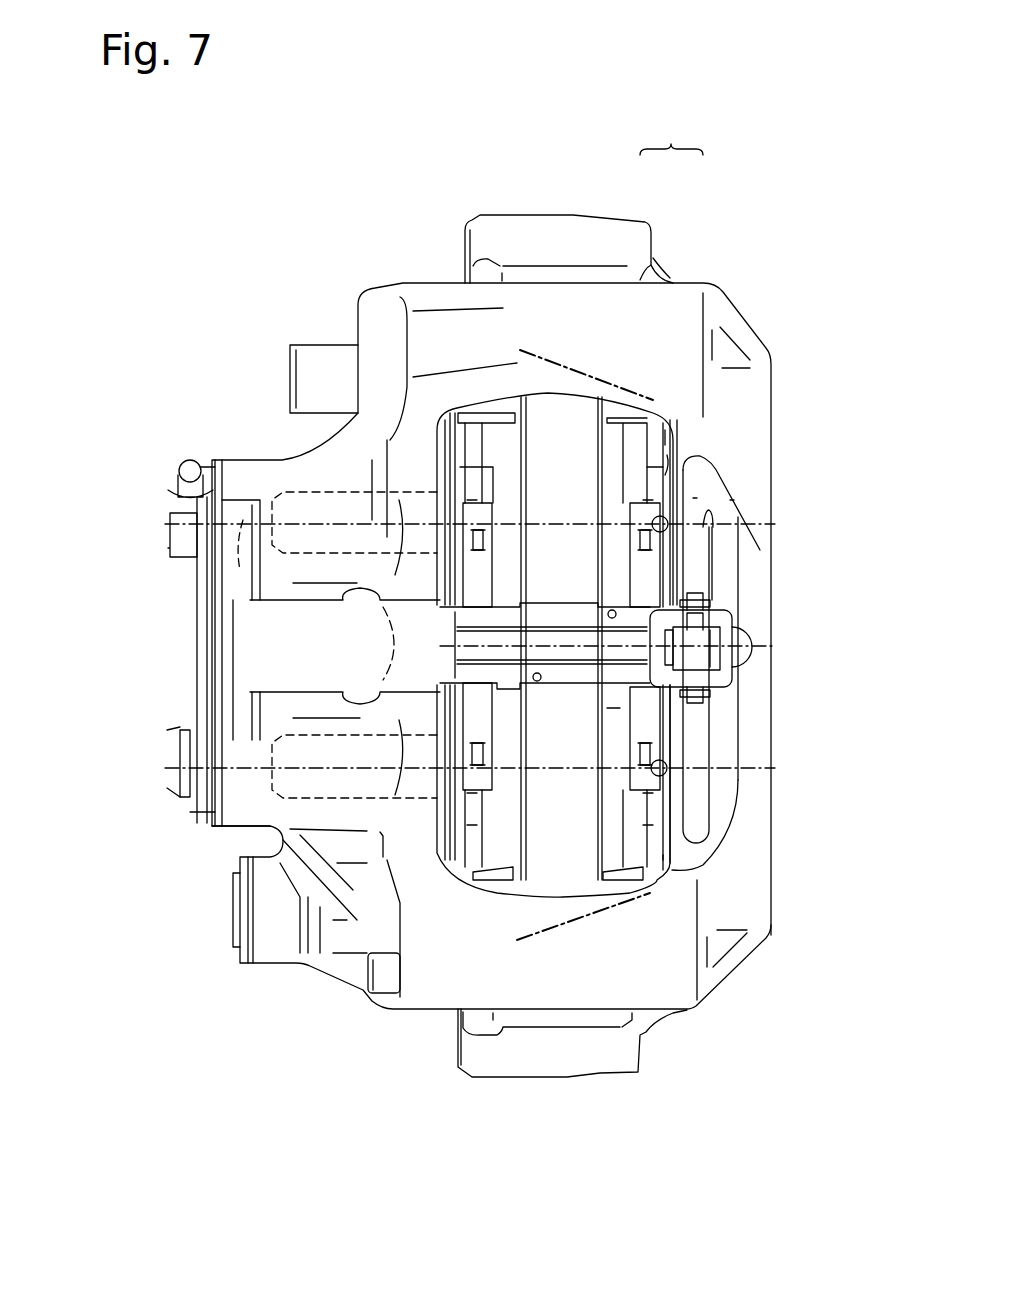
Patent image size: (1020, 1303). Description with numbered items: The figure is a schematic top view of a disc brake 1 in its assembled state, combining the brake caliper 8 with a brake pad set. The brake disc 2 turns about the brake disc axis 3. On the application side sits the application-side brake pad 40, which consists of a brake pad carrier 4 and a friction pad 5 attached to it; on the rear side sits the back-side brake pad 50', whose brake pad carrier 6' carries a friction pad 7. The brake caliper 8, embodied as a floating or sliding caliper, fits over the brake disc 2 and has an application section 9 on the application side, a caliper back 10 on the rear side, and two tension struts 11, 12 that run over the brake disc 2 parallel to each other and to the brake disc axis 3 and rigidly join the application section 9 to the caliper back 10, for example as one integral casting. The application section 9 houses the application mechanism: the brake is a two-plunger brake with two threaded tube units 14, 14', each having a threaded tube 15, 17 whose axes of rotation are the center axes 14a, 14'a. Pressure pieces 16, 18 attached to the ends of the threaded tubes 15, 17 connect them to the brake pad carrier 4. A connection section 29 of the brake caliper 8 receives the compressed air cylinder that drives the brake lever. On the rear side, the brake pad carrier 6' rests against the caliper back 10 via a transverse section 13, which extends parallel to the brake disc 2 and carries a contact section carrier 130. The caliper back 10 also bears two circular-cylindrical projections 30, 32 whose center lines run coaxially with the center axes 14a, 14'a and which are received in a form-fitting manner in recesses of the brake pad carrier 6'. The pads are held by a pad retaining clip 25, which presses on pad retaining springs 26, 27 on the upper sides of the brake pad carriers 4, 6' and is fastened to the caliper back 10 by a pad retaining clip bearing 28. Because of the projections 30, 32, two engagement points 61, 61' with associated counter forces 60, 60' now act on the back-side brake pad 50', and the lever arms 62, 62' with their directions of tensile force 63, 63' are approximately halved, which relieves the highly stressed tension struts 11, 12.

The disc brake 1 is at (325, 188).
The brake disc 2 is at (548, 413).
The brake disc axis 3 is at (633, 643).
The brake pad carrier 4 is at (473, 438).
The friction pad 5 is at (498, 438).
The brake pad carrier 6' is at (674, 509).
The friction pad 7 is at (627, 435).
The brake caliper 8 is at (575, 280).
The application section 9 is at (420, 990).
The caliper back 10 is at (713, 967).
The tension strut 11 is at (622, 307).
The tension strut 12 is at (557, 980).
The transverse section 13 is at (678, 782).
The threaded tube unit 14 is at (415, 522).
The threaded tube unit 14' is at (413, 765).
The center axis 14a is at (160, 520).
The center axis 14'a is at (154, 746).
The threaded tube 15 is at (305, 492).
The pressure piece 16 is at (458, 478).
The threaded tube 17 is at (243, 803).
The pressure piece 18 is at (457, 797).
The pad retaining clip 25 is at (575, 642).
The pad retaining spring 26 is at (478, 560).
The pad retaining spring 27 is at (645, 777).
The pad retaining clip bearing 28 is at (697, 642).
The connection section 29 is at (230, 618).
The projection 30 is at (660, 503).
The projection 32 is at (667, 728).
The application-side brake pad 40 is at (490, 122).
The back-side brake pad 50' is at (671, 135).
The counter force 60 is at (599, 537).
The counter force 60' is at (601, 748).
The engagement point 61 is at (561, 562).
The engagement point 61' is at (648, 736).
The lever arm 62 is at (706, 353).
The lever arm 62' is at (657, 990).
The direction of tensile force 63 is at (586, 286).
The direction of tensile force 63' is at (583, 1012).
The contact section carrier 130 is at (665, 447).